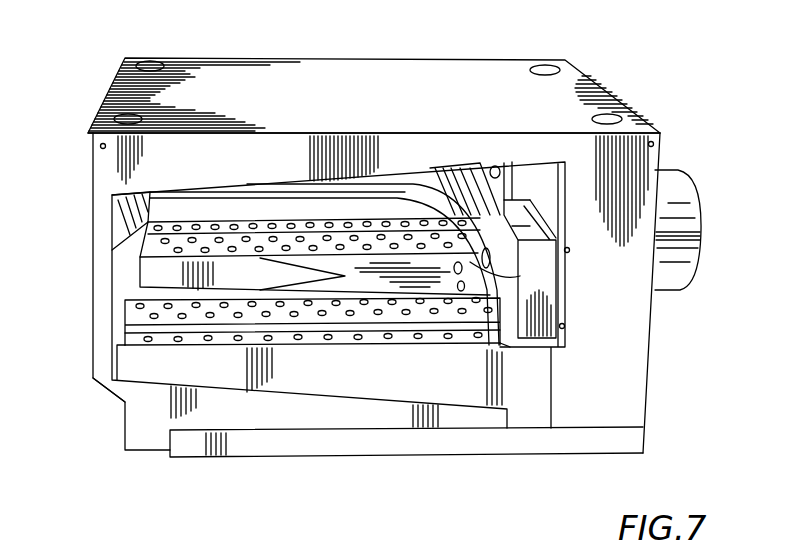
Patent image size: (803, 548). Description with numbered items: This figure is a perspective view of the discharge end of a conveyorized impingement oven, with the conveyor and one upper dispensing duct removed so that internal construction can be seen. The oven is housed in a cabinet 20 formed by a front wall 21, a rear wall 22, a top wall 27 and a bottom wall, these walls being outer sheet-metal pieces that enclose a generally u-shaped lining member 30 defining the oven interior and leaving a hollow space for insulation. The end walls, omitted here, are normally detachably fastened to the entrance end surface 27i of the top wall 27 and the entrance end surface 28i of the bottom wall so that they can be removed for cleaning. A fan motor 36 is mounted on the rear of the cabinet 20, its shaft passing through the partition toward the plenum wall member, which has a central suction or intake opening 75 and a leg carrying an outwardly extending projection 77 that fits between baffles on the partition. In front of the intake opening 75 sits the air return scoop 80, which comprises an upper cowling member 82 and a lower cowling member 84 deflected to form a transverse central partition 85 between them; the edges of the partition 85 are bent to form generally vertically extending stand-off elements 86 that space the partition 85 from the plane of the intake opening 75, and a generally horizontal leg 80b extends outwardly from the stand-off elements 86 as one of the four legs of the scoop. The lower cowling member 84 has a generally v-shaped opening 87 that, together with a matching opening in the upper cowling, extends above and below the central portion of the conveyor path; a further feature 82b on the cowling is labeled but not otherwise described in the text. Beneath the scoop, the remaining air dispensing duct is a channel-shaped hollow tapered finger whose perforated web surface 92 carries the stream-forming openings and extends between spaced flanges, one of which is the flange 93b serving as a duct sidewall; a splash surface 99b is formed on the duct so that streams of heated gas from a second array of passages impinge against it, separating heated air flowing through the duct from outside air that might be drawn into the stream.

The cabinet 20 is at (244, 44).
The front wall 21 is at (92, 236).
The rear wall 22 is at (650, 350).
The top wall 27 is at (445, 76).
The entrance end surface of top wall 27i is at (258, 150).
The entrance end surface of bottom wall 28i is at (155, 404).
The lining member 30 is at (360, 400).
The fan motor 36 is at (668, 197).
The central opening 75 is at (503, 190).
The projection 77 is at (540, 282).
The air return scoop 80 is at (425, 195).
The leg of air scoop 80b is at (560, 332).
The upper cowling member 82 is at (420, 180).
The lower insert end 82b is at (470, 345).
The lower cowling member 84 is at (441, 274).
The transverse central partition 85 is at (520, 276).
The stand-off elements 86 is at (496, 166).
The v-shaped opening 87 is at (292, 276).
The perforated surface 92 is at (135, 318).
The flange 93b is at (150, 268).
The splash surface 99b is at (120, 333).